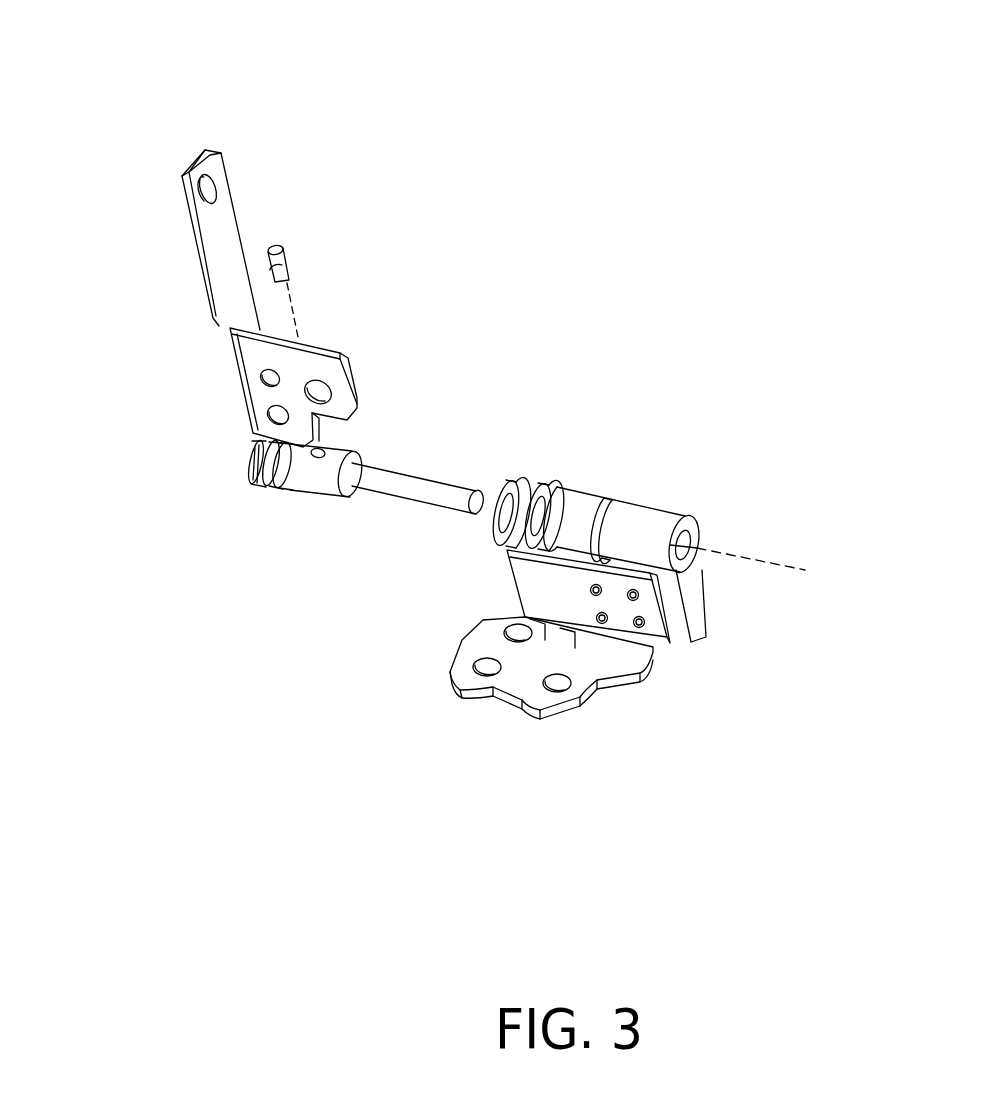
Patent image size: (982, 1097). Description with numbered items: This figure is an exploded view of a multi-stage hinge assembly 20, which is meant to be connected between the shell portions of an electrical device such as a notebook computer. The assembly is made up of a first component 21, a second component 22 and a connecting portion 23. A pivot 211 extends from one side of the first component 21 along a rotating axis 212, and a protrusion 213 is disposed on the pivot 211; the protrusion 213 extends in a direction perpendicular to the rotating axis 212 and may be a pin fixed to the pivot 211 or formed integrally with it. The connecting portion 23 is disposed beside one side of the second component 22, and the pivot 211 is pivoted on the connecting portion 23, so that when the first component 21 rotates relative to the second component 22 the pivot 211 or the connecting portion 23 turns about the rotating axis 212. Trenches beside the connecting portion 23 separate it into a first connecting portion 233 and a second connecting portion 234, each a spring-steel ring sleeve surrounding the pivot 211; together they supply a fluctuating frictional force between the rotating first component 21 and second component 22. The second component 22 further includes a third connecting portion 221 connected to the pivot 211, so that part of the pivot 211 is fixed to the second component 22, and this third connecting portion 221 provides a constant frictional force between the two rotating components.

The multi-stage hinge assembly 20 is at (58, 40).
The first component 21 is at (150, 285).
The pivot 211 is at (410, 493).
The rotating axis 212 is at (760, 562).
The protrusion 213 is at (287, 253).
The second component 22 is at (710, 667).
The third connecting portion 221 is at (680, 505).
The connecting portion 23 is at (512, 575).
The first connecting portion 233 is at (515, 478).
The second connecting portion 234 is at (543, 482).